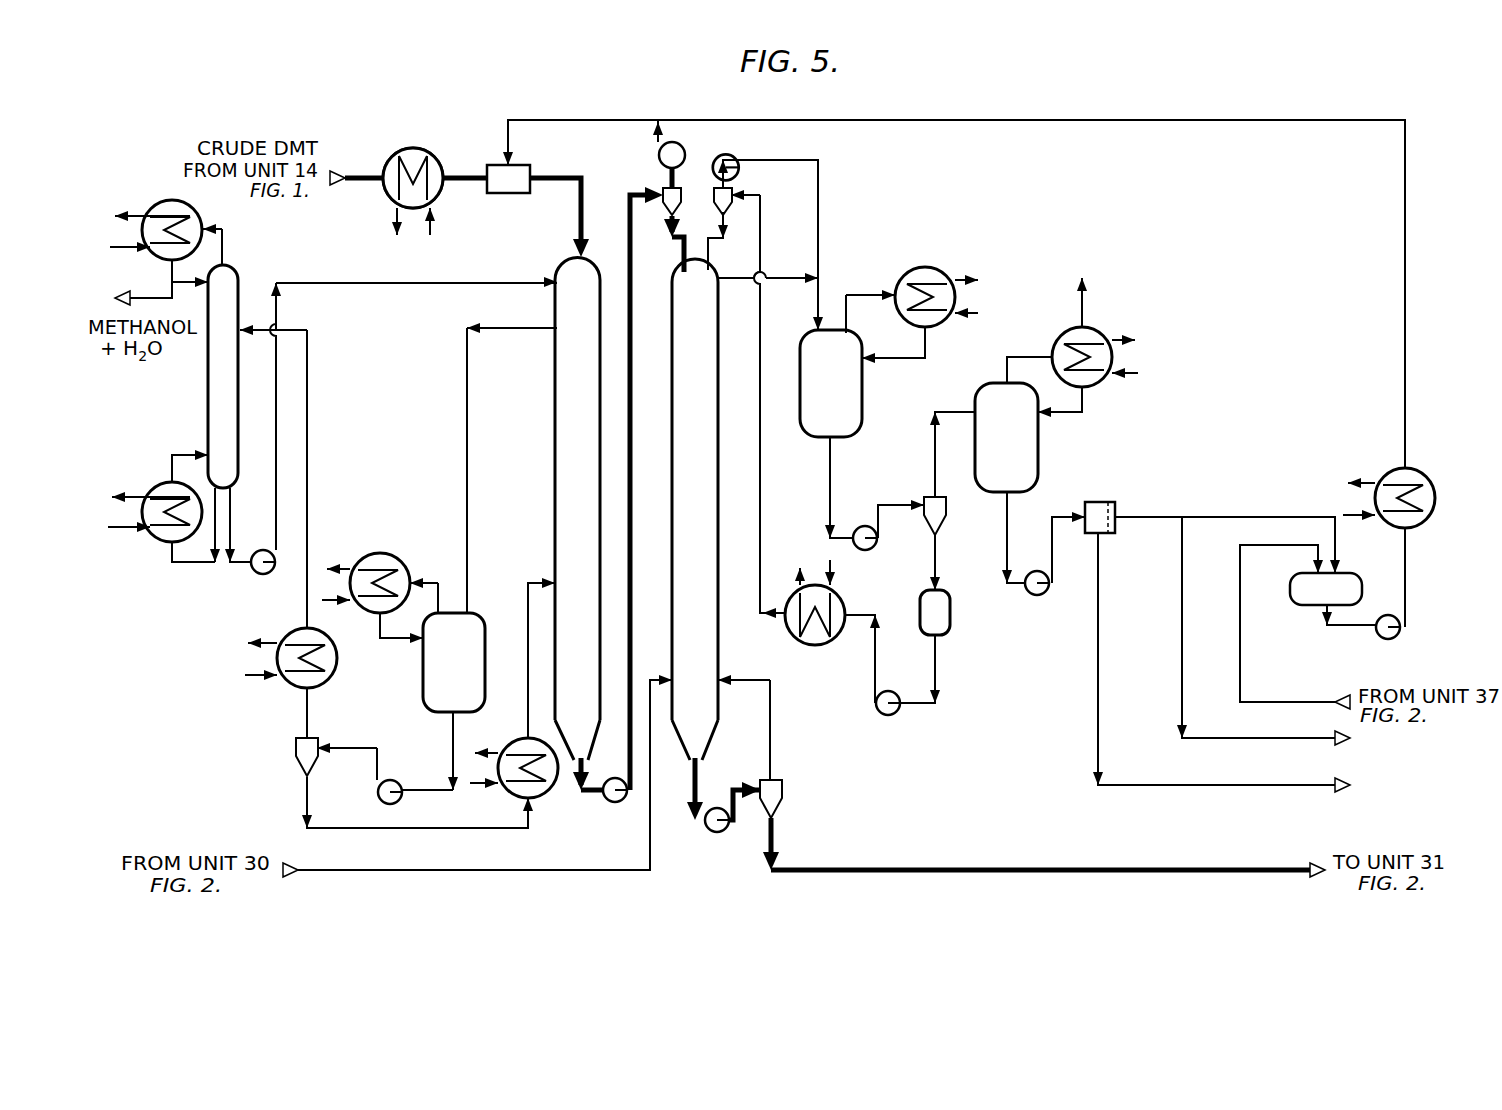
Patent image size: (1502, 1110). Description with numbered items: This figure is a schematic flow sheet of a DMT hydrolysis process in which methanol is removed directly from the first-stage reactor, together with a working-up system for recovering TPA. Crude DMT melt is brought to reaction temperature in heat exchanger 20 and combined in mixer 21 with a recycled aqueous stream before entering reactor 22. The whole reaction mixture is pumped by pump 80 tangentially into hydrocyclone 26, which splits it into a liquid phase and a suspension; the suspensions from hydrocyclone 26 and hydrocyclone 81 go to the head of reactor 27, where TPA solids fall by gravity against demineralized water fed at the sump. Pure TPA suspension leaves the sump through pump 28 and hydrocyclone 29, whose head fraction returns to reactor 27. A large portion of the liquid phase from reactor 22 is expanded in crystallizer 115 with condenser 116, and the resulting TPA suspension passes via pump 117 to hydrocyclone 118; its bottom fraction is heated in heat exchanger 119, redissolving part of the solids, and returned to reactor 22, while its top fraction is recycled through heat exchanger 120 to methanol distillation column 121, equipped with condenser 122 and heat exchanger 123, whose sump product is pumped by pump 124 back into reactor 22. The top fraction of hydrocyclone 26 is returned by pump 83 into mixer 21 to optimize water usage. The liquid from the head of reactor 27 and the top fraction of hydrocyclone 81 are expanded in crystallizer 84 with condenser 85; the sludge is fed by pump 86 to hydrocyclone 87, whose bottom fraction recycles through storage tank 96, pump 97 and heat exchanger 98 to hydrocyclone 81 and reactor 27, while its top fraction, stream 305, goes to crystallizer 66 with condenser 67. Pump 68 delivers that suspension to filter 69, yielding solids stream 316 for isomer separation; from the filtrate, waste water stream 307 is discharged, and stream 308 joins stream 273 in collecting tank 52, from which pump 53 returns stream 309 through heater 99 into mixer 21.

The heat exchanger 20 is at (424, 163).
The mixer 21 is at (510, 194).
The reactor 22 is at (557, 408).
The hydrocyclone 26 is at (666, 218).
The reactor 27 is at (672, 366).
The pump 28 is at (717, 834).
The hydrocyclone 29 is at (782, 808).
The collecting tank 52 is at (1291, 604).
The pump 53 is at (1397, 637).
The crystallizer 66 is at (1041, 462).
The condenser 67 is at (1098, 330).
The pump 68 is at (1048, 593).
The filter 69 is at (1109, 502).
The pump 80 is at (612, 803).
The hydrocyclone 81 is at (732, 218).
The pump 83 is at (684, 162).
The crystallizer 84 is at (864, 405).
The condenser 85 is at (938, 275).
The pump 86 is at (877, 547).
The hydrocyclone 87 is at (943, 522).
The storage tank 96 is at (951, 616).
The pump 97 is at (897, 714).
The heat exchanger 98 is at (828, 643).
The heater 99 is at (1398, 468).
The crystallizer 115 is at (428, 713).
The condenser 116 is at (393, 566).
The pump 117 is at (394, 803).
The hydrocyclone 118 is at (298, 766).
The heat exchanger 119 is at (541, 793).
The heat exchanger 120 is at (321, 678).
The methanol distillation column 121 is at (237, 280).
The condenser 122 is at (192, 219).
The heat exchanger 123 is at (169, 540).
The pump 124 is at (258, 572).
The stream 273 is at (1285, 671).
The stream 305 is at (915, 460).
The stream 307 is at (1162, 670).
The stream 308 is at (1260, 502).
The stream 309 is at (1384, 350).
The stream 316 is at (1079, 670).